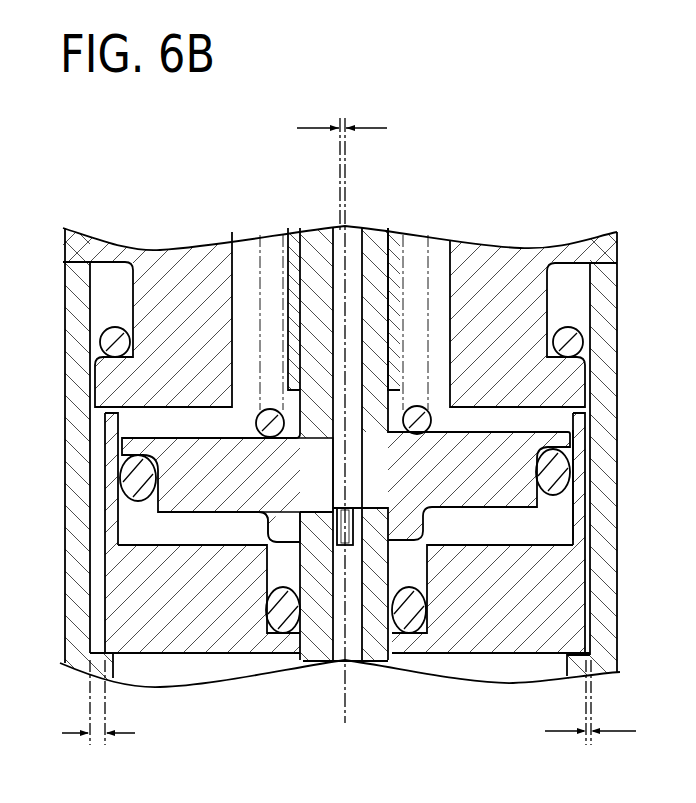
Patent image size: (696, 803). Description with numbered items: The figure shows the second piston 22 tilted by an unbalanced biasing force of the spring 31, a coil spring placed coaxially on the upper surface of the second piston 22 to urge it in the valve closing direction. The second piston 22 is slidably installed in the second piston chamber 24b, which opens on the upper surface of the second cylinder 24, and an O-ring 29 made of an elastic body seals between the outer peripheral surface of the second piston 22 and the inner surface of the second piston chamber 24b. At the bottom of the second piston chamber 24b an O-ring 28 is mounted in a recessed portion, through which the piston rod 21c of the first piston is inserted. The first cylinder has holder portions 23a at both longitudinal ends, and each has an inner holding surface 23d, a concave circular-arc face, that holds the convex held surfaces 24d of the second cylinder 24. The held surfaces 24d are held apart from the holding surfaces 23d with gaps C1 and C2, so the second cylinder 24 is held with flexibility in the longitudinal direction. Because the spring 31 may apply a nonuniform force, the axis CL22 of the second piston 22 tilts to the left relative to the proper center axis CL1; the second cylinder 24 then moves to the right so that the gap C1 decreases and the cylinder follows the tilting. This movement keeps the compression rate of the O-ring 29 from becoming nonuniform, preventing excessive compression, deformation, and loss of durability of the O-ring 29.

The spring 31 is at (417, 293).
The second piston 22 is at (488, 417).
The O-ring 29 is at (556, 458).
The second piston chamber 24b is at (575, 528).
The held surface 24d is at (105, 512).
The second cylinder 24 is at (558, 585).
The holder portion 23a is at (598, 607).
The holding surface 23d is at (90, 572).
The O-ring 28 is at (262, 625).
The piston rod 21c is at (319, 635).
The gap C1 is at (590, 715).
The gap C2 is at (98, 715).
The proper center axis CL1 is at (347, 187).
The axis of the second piston CL22 is at (340, 199).